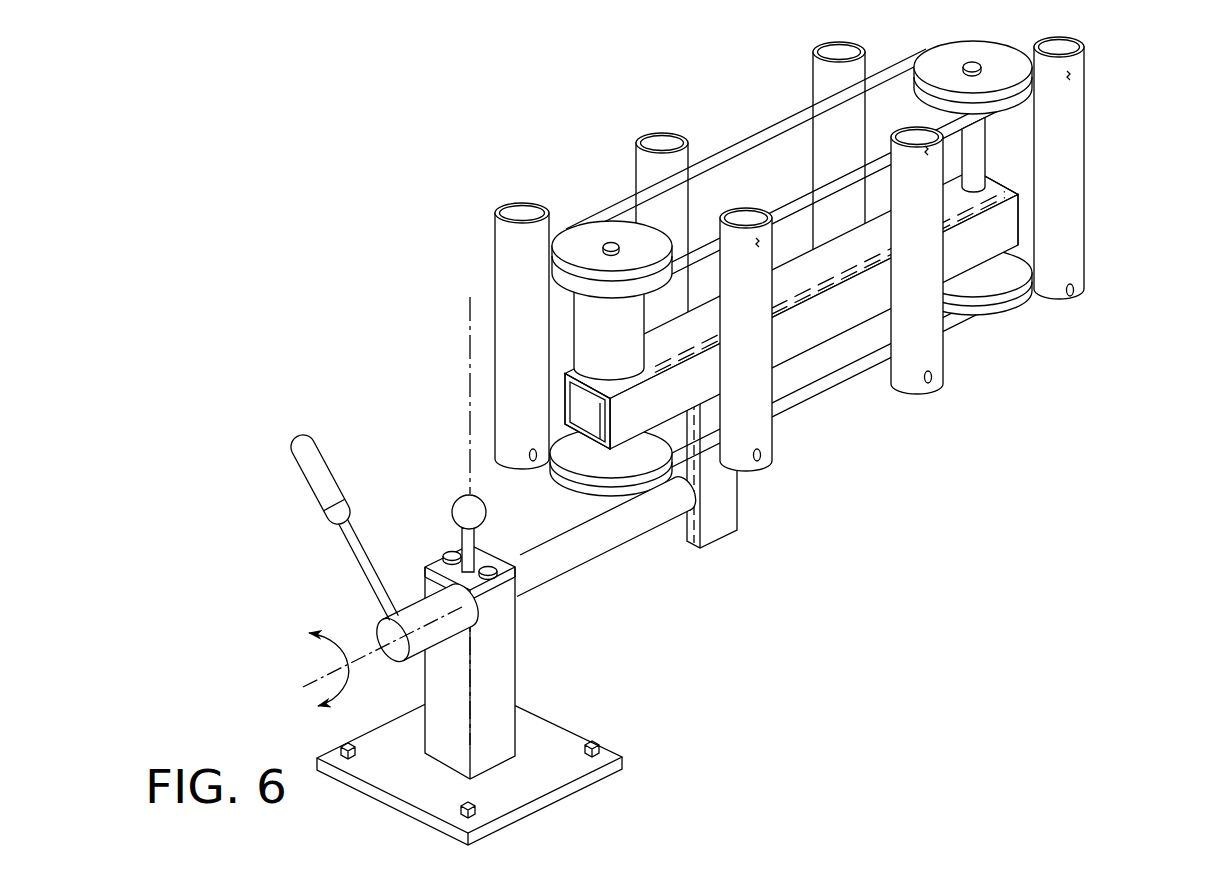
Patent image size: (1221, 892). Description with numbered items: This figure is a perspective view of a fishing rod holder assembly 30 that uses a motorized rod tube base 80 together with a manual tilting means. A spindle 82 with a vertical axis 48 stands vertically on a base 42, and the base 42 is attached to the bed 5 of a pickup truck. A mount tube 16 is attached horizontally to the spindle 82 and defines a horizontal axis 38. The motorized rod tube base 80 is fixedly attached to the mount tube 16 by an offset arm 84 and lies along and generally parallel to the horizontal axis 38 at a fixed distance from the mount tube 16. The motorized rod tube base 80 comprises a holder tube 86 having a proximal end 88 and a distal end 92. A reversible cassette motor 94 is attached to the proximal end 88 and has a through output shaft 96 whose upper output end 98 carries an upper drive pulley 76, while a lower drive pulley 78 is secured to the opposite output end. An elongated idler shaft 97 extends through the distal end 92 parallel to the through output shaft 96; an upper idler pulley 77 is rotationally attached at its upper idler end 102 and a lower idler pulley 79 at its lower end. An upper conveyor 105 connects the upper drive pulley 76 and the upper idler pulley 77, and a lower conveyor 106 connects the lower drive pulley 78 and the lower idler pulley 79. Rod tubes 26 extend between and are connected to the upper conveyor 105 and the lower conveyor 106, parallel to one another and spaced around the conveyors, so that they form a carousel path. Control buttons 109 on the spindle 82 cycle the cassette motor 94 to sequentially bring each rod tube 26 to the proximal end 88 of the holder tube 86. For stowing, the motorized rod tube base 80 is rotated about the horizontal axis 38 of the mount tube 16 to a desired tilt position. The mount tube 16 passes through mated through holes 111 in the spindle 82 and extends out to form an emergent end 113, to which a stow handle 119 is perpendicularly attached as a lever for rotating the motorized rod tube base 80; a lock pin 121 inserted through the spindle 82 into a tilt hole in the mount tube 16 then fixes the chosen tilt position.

The fishing rod holder assembly 30 is at (525, 163).
The upper conveyor 105 is at (800, 107).
The lower conveyor 106 is at (986, 318).
The elongated idler shaft 97 is at (966, 60).
The upper idler pulley 77 is at (1023, 77).
The upper idler end 102 is at (958, 83).
The rod tubes 26 is at (1064, 113).
The through output shaft 96 is at (608, 240).
The upper drive pulley 76 is at (634, 260).
The distal end 92 is at (1014, 212).
The upper output end 98 is at (606, 252).
The lower idler pulley 79 is at (1025, 287).
The reversible cassette motor 94 is at (626, 370).
The proximal end 88 is at (617, 432).
The lower drive pulley 78 is at (598, 473).
The vertical axis 48 is at (465, 378).
The holder tube 86 is at (821, 322).
The motorized rod tube base 80 is at (1107, 458).
The offset arm 84 is at (720, 507).
The mount tube 16 is at (620, 530).
The stow handle 119 is at (311, 470).
The lock pin 121 is at (455, 507).
The control buttons 109 is at (490, 563).
The emergent end 113 is at (393, 612).
The horizontal axis 38 is at (317, 672).
The mated through holes 111 is at (453, 622).
The spindle 82 is at (499, 666).
The base 42 is at (543, 776).
The bed 5 is at (658, 810).